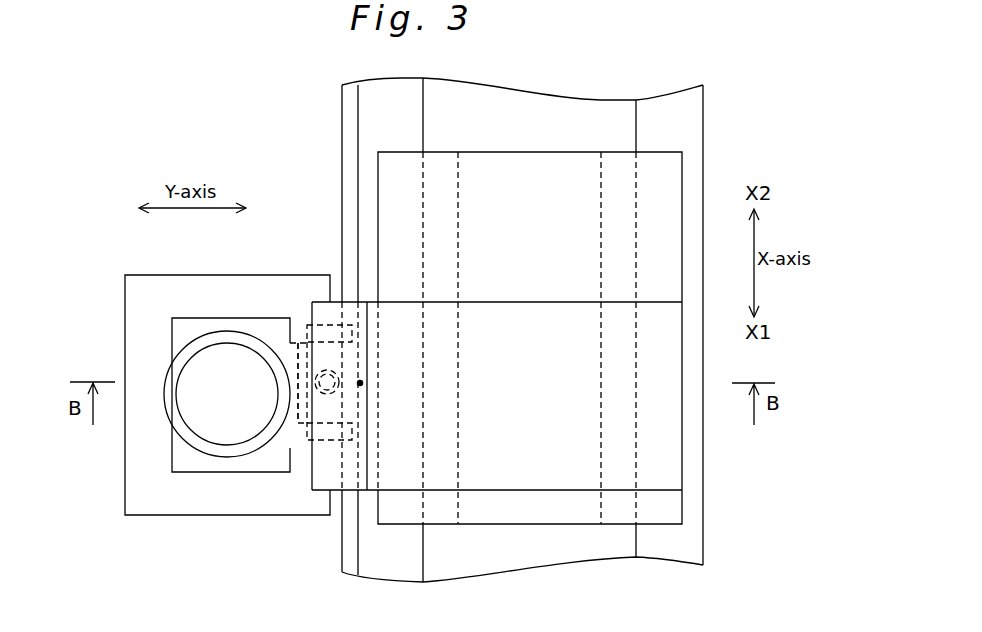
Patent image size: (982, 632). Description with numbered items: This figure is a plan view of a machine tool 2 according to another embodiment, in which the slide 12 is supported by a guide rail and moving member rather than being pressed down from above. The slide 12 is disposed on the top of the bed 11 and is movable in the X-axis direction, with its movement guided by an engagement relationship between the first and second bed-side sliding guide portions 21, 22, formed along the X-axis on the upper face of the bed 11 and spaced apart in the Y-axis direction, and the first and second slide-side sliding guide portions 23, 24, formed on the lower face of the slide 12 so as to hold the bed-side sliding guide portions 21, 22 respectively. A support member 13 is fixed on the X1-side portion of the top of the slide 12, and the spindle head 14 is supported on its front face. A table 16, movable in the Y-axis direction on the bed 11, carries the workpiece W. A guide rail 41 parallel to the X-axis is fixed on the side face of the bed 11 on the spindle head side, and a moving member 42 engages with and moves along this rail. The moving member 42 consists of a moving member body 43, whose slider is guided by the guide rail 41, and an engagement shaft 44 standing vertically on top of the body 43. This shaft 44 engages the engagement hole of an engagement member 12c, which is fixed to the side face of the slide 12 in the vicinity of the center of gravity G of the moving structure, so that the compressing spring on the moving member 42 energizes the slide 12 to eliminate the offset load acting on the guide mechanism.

The machine tool 2 is at (190, 141).
The bed 11 is at (693, 118).
The slide 12 is at (385, 188).
The engagement member 12c is at (303, 415).
The support member 13 is at (673, 430).
The spindle head 14 is at (170, 377).
The table 16 is at (133, 277).
The first bed-side sliding guide portion 21 is at (628, 125).
The second bed-side sliding guide portion 22 is at (430, 125).
The first slide-side sliding guide portion 23 is at (610, 447).
The second slide-side sliding guide portion 24 is at (453, 242).
The guide rail 41 is at (345, 153).
The moving member 42 is at (332, 456).
The moving member body 43 is at (310, 468).
The engagement shaft 44 is at (300, 338).
The center of gravity G is at (360, 383).
The workpiece W is at (173, 328).